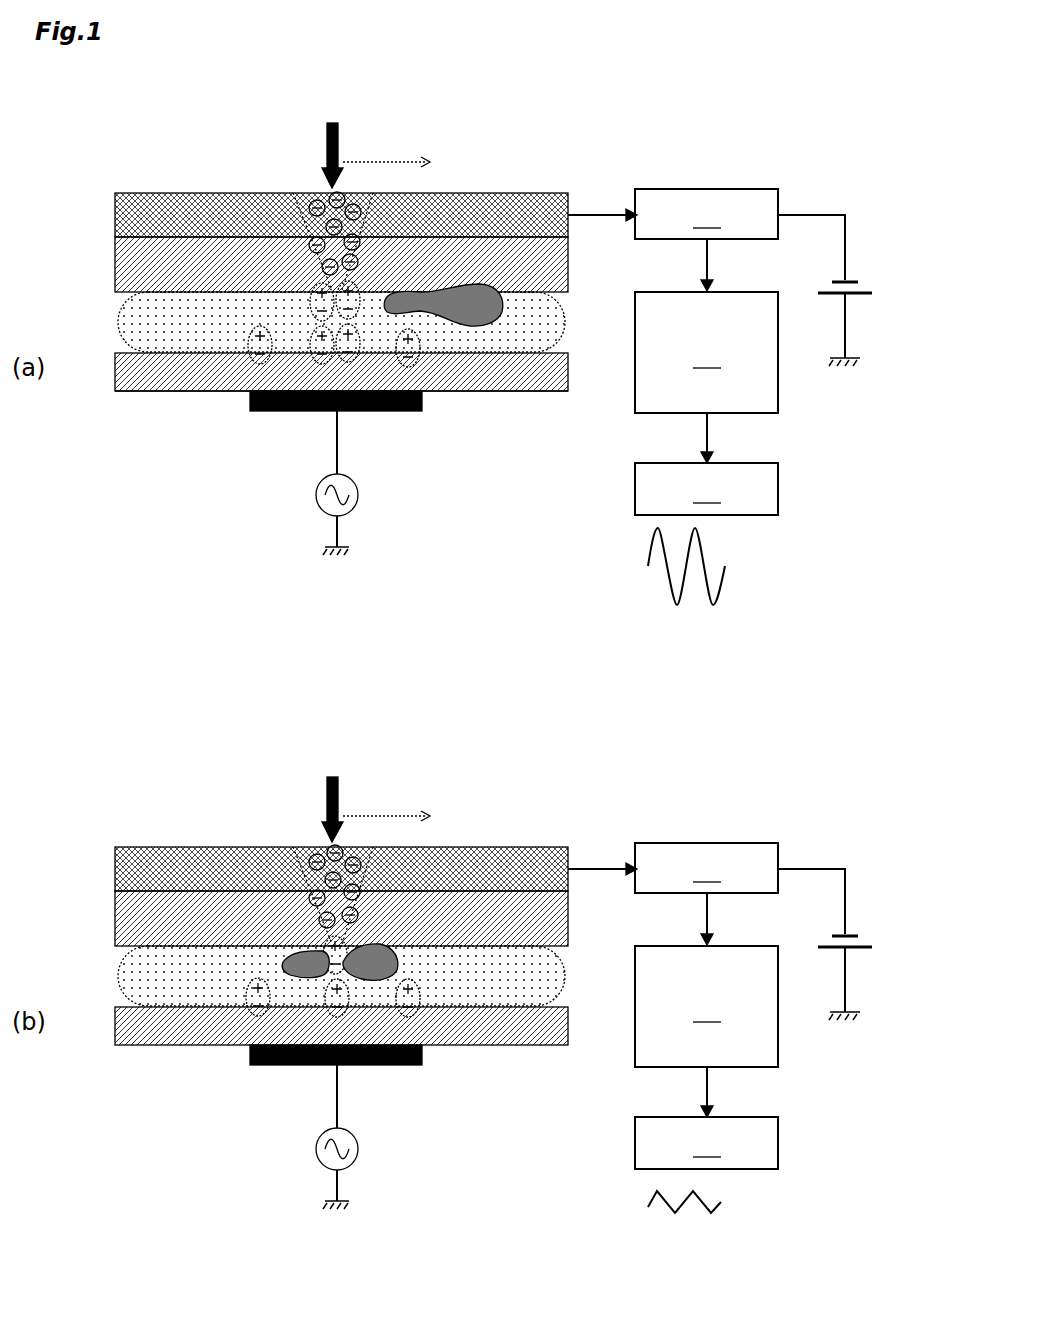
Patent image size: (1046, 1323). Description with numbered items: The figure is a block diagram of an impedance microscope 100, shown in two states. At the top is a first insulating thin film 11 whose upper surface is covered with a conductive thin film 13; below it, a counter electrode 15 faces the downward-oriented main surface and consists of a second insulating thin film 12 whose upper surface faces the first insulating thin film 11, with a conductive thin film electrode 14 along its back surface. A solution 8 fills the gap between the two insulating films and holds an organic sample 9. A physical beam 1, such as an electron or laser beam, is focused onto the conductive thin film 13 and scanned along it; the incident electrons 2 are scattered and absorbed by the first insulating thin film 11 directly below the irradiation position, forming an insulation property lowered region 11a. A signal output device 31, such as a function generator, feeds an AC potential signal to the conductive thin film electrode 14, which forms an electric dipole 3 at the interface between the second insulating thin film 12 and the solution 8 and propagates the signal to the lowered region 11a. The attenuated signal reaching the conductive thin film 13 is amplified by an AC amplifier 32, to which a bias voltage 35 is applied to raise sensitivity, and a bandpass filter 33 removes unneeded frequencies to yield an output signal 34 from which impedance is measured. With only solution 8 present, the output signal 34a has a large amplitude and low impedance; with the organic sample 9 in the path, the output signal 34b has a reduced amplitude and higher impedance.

The physical beam 1 is at (327, 150).
The incident electrons 2 is at (313, 198).
The electric dipole 3 is at (408, 367).
The solution 8 is at (118, 322).
The organic sample 9 is at (468, 326).
The first insulating thin film 11 is at (118, 258).
The insulation property lowered region 11a is at (388, 248).
The second insulating thin film 12 is at (233, 392).
The conductive thin film 13 is at (160, 193).
The conductive thin film electrode 14 is at (282, 412).
The counter electrode 15 is at (195, 409).
The signal output device 31 is at (359, 497).
The AC amplifier 32 is at (706, 541).
The bandpass filter 33 is at (706, 679).
The output signal 34 is at (706, 816).
The output signal 34a is at (765, 576).
The output signal 34b is at (765, 1206).
The bias voltage 35 is at (866, 296).
The impedance microscope 100 is at (658, 148).